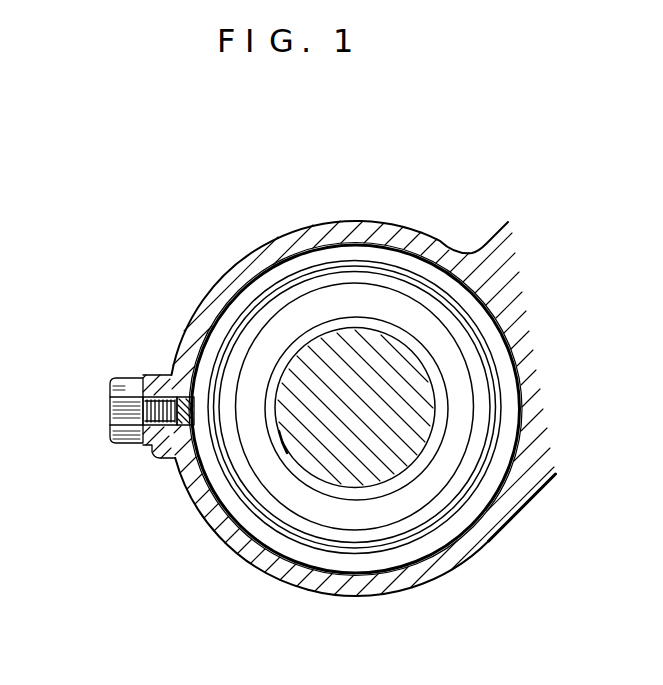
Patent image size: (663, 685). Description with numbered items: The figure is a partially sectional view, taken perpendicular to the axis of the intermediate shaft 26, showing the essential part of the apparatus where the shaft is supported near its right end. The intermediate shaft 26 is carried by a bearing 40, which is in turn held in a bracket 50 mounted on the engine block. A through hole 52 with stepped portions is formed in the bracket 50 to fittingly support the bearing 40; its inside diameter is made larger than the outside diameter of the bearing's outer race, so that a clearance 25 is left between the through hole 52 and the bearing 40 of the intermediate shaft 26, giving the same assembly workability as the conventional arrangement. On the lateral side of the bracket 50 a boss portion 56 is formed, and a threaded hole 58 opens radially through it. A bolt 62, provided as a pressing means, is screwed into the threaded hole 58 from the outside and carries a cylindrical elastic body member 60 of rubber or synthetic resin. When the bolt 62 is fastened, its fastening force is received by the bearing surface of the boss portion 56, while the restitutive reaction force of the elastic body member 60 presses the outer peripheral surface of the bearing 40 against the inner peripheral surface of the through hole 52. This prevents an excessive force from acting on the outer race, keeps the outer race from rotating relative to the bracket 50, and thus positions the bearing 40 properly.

The clearance 25 is at (240, 478).
The intermediate shaft 26 is at (362, 480).
The bearing 40 is at (261, 271).
The bracket 50 is at (386, 221).
The through hole 52 is at (230, 298).
The boss portion 56 is at (157, 447).
The threaded hole 58 is at (150, 393).
The elastic body member 60 is at (183, 402).
The bolt 62 is at (115, 418).